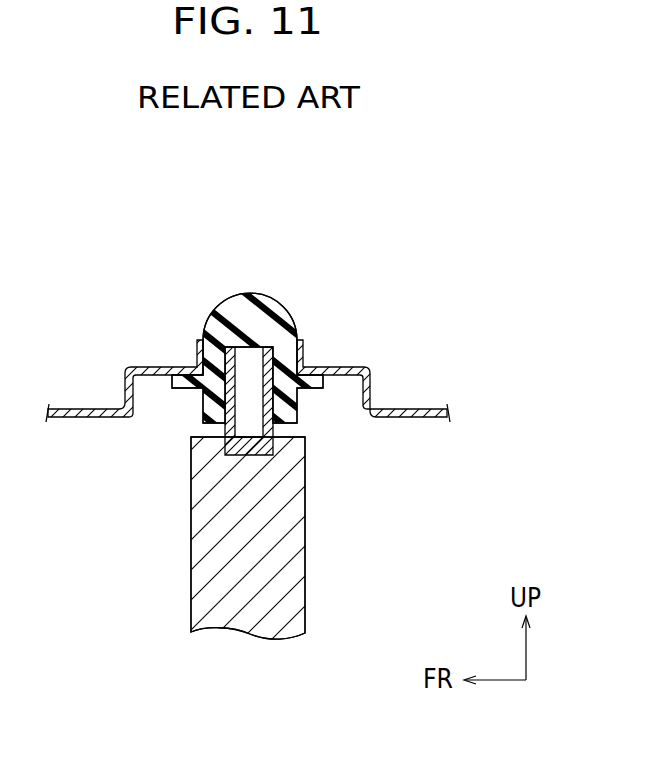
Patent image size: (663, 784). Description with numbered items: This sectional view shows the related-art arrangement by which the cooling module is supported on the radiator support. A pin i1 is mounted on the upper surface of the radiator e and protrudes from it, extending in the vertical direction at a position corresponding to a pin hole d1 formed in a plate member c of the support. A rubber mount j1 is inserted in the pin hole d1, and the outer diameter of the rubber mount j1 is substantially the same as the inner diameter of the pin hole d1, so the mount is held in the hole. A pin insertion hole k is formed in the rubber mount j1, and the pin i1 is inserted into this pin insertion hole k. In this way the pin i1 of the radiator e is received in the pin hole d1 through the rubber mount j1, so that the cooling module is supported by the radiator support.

The rubber mount j1 is at (250, 292).
The pin hole d1 is at (250, 375).
The panel c is at (340, 367).
The pin insertion hole k is at (236, 392).
The pin i1 is at (270, 402).
The radiator e is at (304, 566).